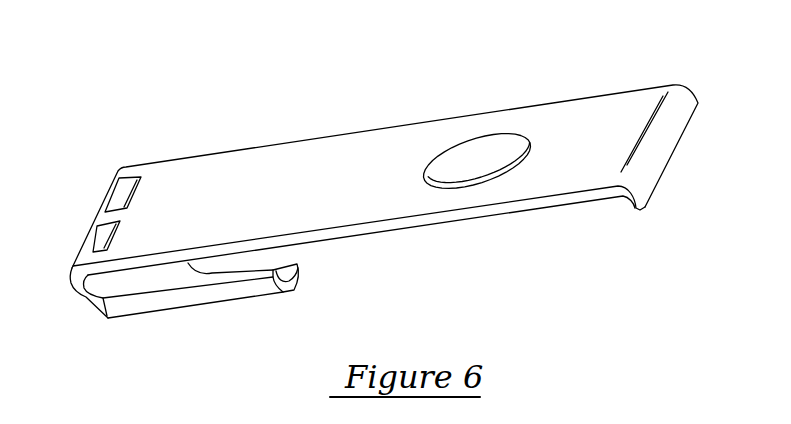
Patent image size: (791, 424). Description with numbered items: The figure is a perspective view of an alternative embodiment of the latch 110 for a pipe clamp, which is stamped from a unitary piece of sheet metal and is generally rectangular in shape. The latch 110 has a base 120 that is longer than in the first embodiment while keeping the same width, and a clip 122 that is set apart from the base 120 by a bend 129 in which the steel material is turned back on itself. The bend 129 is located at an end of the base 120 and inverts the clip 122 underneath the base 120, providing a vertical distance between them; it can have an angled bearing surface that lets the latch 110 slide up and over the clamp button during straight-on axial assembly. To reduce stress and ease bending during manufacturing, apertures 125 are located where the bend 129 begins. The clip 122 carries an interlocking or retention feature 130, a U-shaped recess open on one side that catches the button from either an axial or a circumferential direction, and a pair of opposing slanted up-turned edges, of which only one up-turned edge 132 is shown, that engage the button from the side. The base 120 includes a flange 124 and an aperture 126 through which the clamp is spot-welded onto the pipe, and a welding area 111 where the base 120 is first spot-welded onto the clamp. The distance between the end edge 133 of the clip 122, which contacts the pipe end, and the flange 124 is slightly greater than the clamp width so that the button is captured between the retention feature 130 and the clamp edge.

The latch 110 is at (418, 105).
The welding area 111 is at (592, 131).
The base 120 is at (307, 155).
The clip 122 is at (155, 287).
The flange 124 is at (652, 167).
The apertures 125 is at (96, 227).
The aperture 126 is at (482, 167).
The bend 129 is at (70, 288).
The interlocking or retention feature 130 is at (248, 260).
The up-turned edge 132 is at (222, 299).
The end edge 133 is at (298, 278).